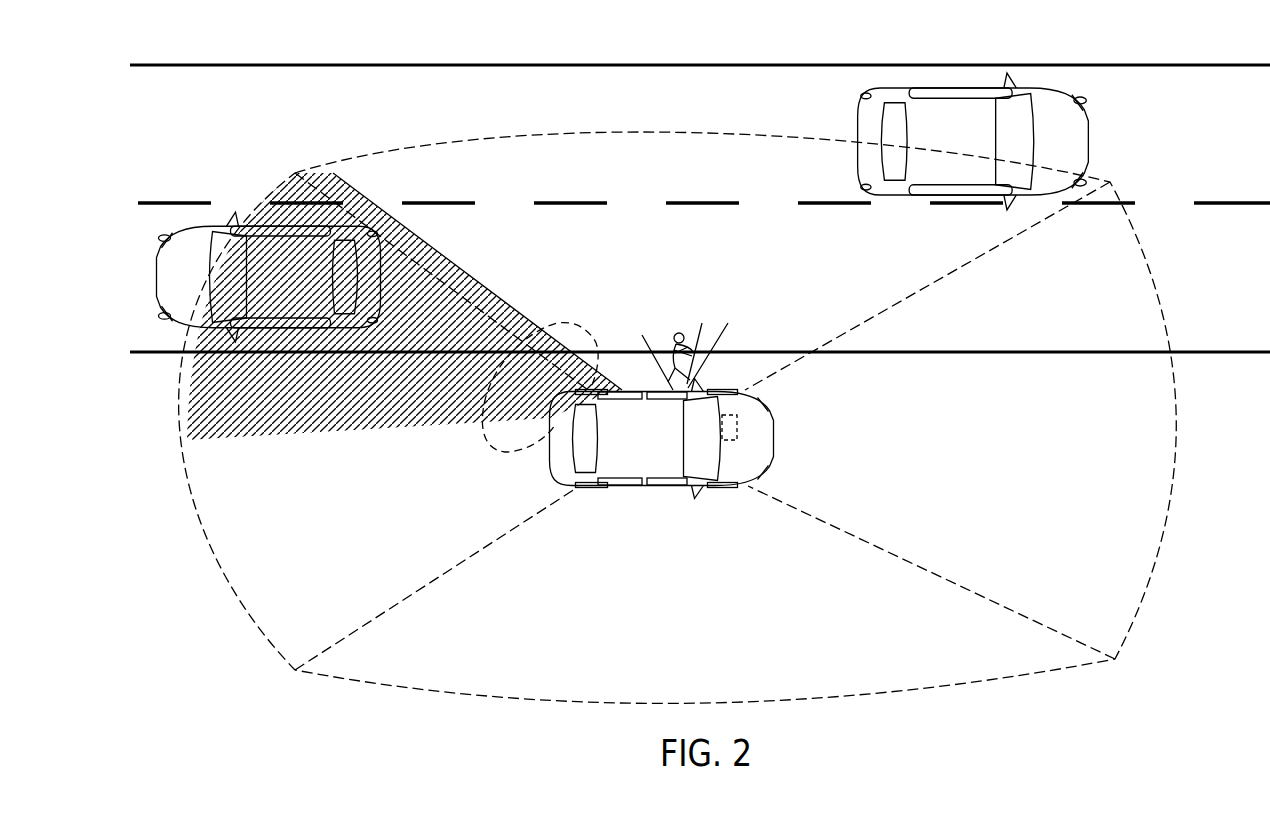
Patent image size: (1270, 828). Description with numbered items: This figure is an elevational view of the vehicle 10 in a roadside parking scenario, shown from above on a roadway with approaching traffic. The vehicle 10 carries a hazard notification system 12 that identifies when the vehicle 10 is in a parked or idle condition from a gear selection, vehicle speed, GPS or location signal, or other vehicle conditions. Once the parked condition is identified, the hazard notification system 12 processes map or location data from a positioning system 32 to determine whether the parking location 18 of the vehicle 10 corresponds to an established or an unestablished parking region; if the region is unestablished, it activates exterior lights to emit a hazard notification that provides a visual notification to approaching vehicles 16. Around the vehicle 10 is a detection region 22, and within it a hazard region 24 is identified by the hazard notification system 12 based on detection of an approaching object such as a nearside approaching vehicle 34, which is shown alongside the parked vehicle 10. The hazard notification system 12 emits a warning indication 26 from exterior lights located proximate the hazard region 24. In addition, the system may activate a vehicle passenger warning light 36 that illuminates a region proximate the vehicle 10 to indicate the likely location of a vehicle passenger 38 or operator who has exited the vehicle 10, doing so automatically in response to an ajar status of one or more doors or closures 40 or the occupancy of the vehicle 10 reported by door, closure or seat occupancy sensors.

The vehicle 10 is at (660, 487).
The hazard notification system 12 is at (812, 446).
The approaching vehicle 16 is at (990, 117).
The parking location 18 is at (607, 505).
The detection region 22 is at (620, 133).
The hazard region 24 is at (463, 267).
The warning indication 26 is at (580, 327).
The positioning system 32 is at (737, 430).
The nearside approaching vehicle 34 is at (229, 246).
The vehicle passenger warning light 36 is at (707, 372).
The vehicle passenger 38 is at (700, 318).
The doors or closures 40 is at (622, 400).